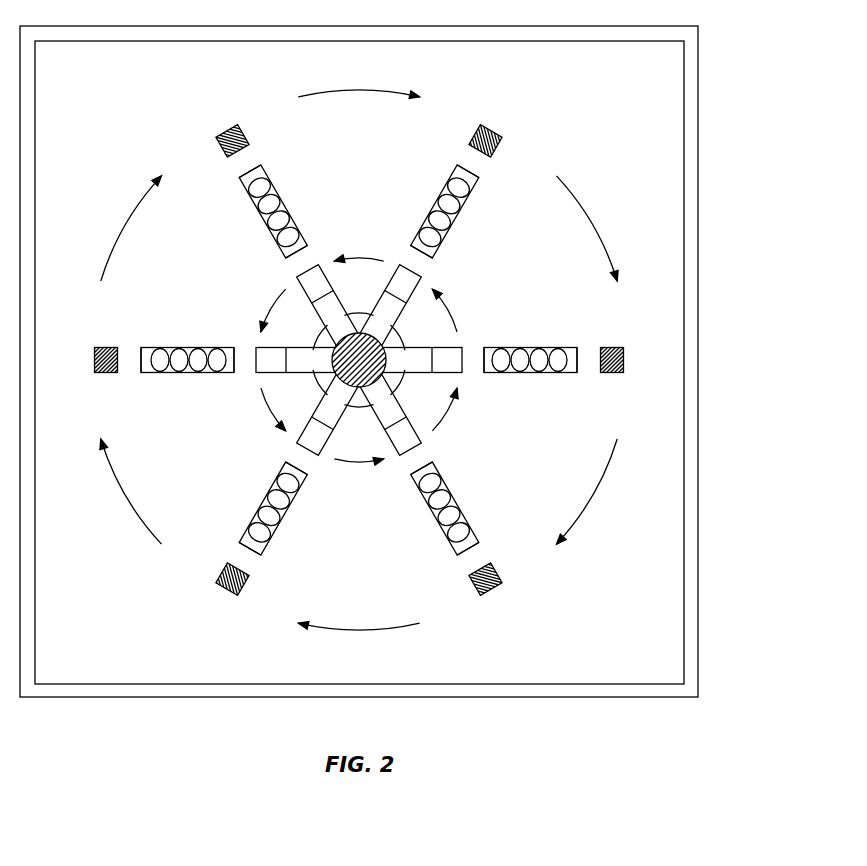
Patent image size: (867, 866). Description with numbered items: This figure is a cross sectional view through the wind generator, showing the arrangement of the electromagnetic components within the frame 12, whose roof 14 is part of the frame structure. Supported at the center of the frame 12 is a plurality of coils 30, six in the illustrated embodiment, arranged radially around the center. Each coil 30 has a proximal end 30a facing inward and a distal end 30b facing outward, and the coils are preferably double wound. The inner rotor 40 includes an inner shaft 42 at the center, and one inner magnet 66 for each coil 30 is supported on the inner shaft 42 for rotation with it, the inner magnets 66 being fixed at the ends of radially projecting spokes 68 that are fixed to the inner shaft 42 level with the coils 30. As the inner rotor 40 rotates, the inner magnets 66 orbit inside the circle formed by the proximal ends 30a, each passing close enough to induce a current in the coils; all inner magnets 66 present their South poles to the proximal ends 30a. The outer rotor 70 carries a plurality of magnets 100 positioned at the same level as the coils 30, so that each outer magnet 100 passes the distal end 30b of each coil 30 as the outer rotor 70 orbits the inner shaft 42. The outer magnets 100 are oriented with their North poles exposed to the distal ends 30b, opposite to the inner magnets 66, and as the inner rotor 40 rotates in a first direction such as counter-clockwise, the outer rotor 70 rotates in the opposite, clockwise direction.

The frame 12 is at (700, 570).
The roof 14 is at (668, 648).
The coils 30 is at (260, 216).
The proximal end 30a is at (305, 252).
The distal end 30b is at (262, 171).
The inner rotor 40 is at (384, 347).
The inner shaft 42 is at (338, 344).
The inner magnets 66 is at (330, 283).
The spokes 68 is at (336, 297).
The outer rotor 70 is at (614, 347).
The magnets 100 is at (248, 136).